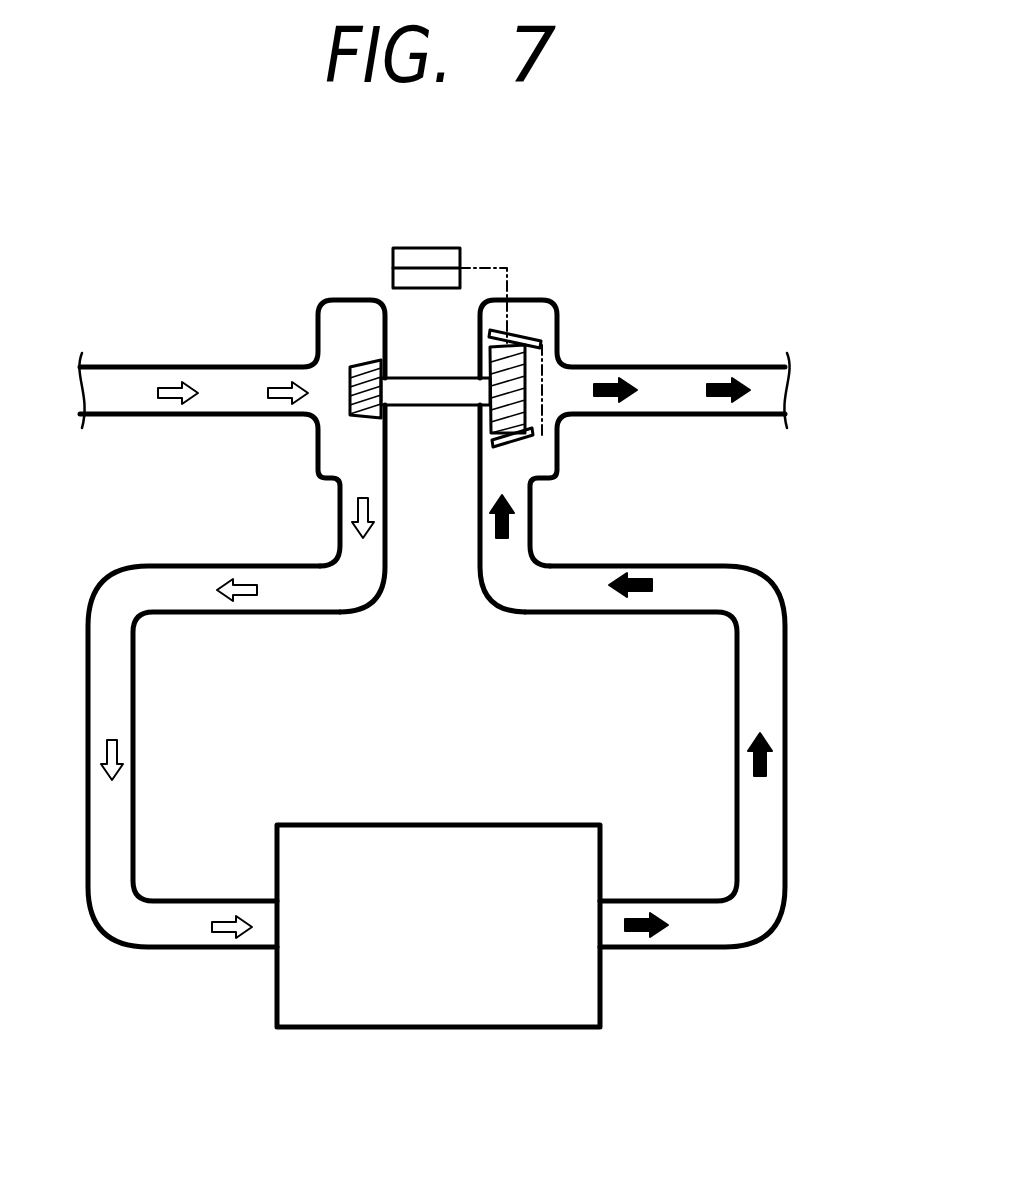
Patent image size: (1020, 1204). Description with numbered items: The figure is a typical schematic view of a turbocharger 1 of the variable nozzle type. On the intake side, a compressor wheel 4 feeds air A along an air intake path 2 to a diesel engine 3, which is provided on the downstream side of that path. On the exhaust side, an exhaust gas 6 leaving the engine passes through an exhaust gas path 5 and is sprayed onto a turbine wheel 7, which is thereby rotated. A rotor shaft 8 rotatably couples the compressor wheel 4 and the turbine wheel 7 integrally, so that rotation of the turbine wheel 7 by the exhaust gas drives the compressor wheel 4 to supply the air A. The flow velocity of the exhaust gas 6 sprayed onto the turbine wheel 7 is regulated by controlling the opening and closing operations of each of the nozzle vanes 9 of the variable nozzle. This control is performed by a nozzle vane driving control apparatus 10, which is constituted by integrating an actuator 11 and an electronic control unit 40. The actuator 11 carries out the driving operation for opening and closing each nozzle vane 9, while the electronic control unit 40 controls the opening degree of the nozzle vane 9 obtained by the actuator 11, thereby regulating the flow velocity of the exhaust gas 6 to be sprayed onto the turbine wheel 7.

The turbocharger 1 is at (592, 505).
The air intake path 2 is at (133, 683).
The diesel engine 3 is at (522, 825).
The compressor wheel 4 is at (352, 418).
The exhaust gas path 5 is at (785, 815).
The exhaust gas 6 is at (765, 758).
The turbine wheel 7 is at (490, 430).
The rotor shaft 8 is at (431, 385).
The nozzle vane 9 is at (540, 344).
The nozzle vane driving control apparatus 10 is at (416, 246).
The actuator 11 is at (393, 255).
The electronic control unit 40 is at (393, 283).
The air A is at (167, 390).